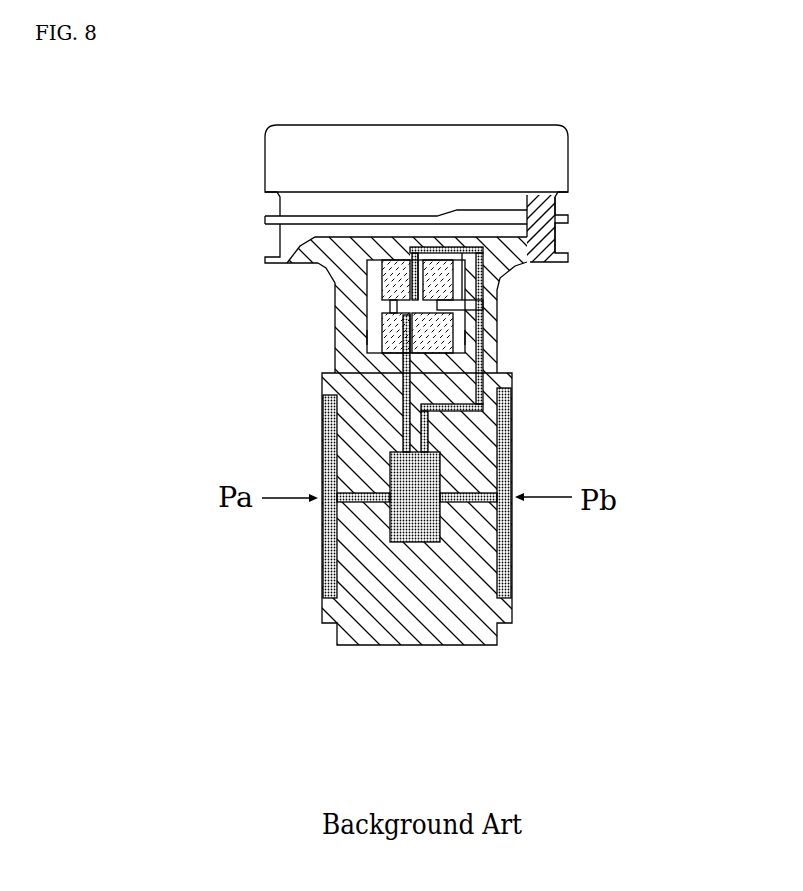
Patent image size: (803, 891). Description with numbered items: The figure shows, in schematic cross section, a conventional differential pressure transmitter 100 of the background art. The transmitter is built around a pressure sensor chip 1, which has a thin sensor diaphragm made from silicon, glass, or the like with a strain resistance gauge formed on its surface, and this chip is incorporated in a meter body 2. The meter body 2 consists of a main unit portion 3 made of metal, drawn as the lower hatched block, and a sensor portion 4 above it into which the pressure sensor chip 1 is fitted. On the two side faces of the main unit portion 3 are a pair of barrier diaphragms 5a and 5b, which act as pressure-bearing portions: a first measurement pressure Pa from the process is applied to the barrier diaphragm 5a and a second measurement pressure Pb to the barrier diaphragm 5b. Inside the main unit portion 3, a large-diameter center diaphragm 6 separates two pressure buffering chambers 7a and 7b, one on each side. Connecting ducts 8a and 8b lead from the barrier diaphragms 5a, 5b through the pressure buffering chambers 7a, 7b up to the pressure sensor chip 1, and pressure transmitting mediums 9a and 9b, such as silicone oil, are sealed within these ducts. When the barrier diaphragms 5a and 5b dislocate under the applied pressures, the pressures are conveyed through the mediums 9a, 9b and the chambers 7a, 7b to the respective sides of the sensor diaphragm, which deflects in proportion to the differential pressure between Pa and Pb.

The differential pressure transmitter 100 is at (685, 111).
The pressure sensor chip 1 is at (457, 299).
The meter body 2 is at (543, 246).
The main unit portion 3 is at (460, 610).
The sensor portion 4 is at (340, 289).
The barrier diaphragm 5a is at (318, 440).
The barrier diaphragm 5b is at (513, 430).
The center diaphragm 6 is at (413, 476).
The pressure buffering chamber 7a is at (410, 522).
The pressure buffering chamber 7b is at (440, 532).
The connecting duct 8a is at (400, 387).
The connecting duct 8b is at (490, 386).
The pressure transmitting medium 9a is at (380, 340).
The pressure transmitting medium 9b is at (470, 340).